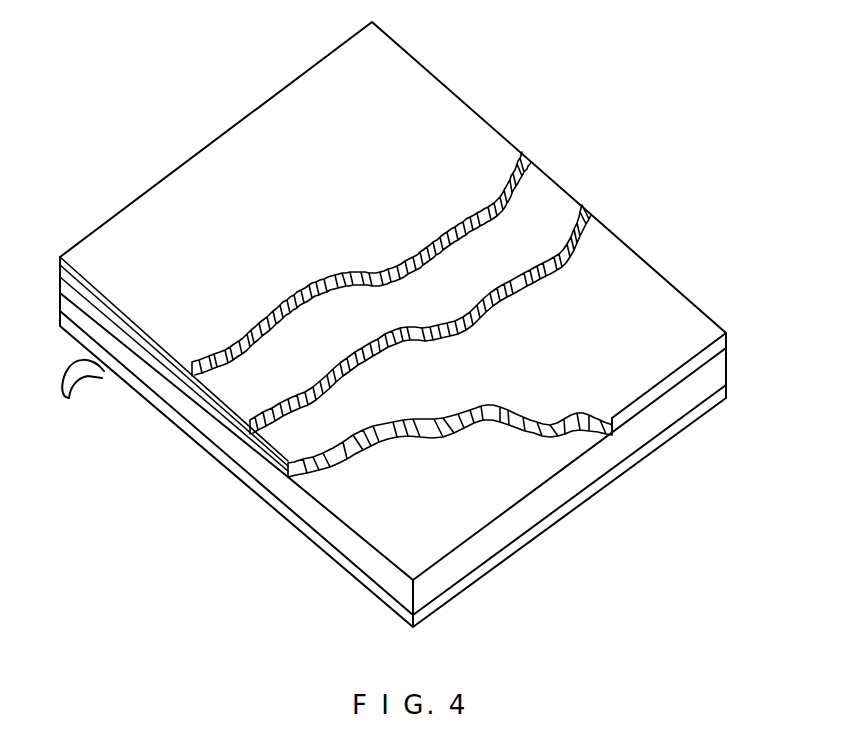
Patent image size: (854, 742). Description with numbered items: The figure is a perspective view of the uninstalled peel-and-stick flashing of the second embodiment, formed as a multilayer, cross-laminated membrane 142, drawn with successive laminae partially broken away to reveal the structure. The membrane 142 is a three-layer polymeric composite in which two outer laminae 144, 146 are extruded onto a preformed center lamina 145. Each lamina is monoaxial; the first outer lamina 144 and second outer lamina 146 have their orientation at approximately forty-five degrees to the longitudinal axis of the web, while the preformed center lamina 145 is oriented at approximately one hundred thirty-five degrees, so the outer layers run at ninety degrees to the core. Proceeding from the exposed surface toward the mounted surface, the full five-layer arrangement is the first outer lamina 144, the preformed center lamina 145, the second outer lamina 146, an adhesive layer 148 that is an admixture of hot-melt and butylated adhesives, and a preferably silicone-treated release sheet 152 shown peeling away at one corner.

The three-layer polymeric composite membrane 142 is at (546, 168).
The first outer lamina 144 is at (500, 150).
The preformed center lamina 145 is at (583, 200).
The second outer lamina 146 is at (675, 325).
The adhesive layer 148 is at (520, 483).
The release sheet 152 is at (85, 380).